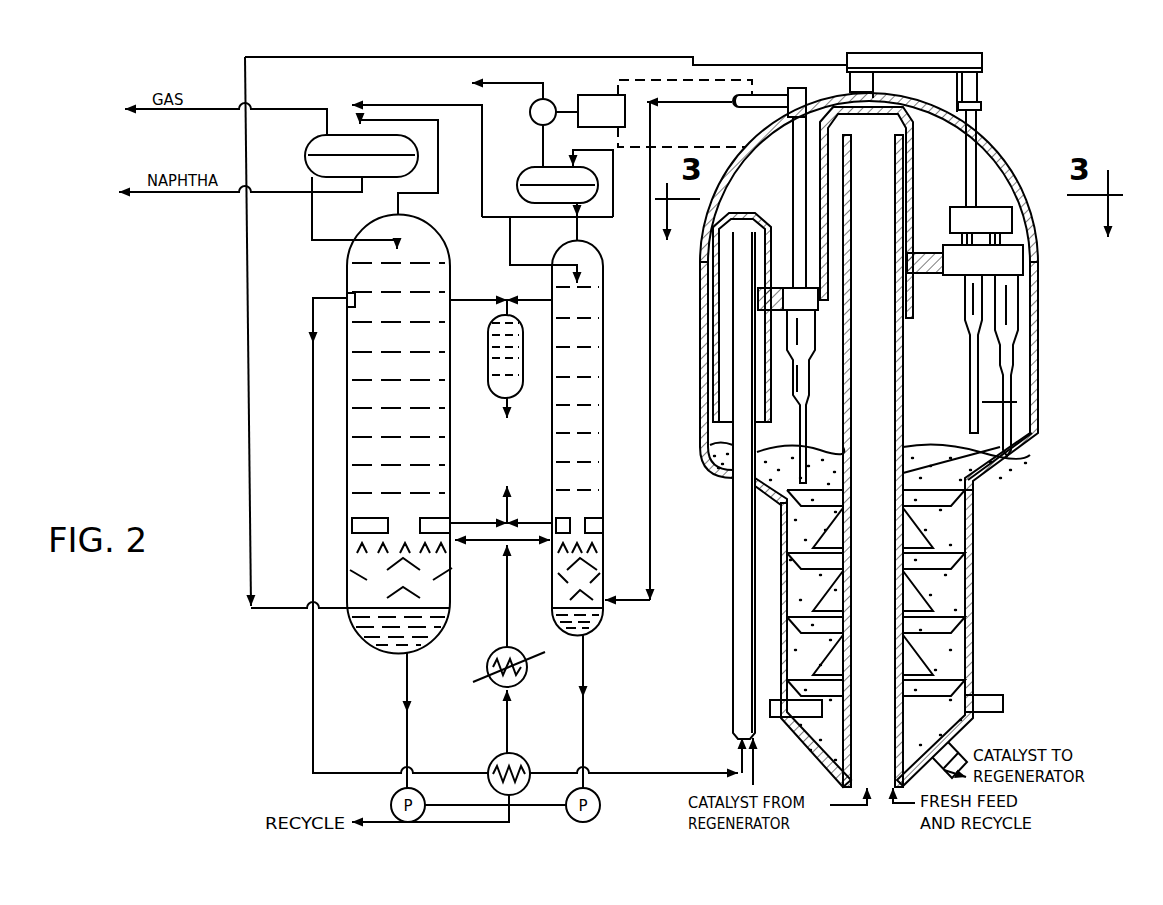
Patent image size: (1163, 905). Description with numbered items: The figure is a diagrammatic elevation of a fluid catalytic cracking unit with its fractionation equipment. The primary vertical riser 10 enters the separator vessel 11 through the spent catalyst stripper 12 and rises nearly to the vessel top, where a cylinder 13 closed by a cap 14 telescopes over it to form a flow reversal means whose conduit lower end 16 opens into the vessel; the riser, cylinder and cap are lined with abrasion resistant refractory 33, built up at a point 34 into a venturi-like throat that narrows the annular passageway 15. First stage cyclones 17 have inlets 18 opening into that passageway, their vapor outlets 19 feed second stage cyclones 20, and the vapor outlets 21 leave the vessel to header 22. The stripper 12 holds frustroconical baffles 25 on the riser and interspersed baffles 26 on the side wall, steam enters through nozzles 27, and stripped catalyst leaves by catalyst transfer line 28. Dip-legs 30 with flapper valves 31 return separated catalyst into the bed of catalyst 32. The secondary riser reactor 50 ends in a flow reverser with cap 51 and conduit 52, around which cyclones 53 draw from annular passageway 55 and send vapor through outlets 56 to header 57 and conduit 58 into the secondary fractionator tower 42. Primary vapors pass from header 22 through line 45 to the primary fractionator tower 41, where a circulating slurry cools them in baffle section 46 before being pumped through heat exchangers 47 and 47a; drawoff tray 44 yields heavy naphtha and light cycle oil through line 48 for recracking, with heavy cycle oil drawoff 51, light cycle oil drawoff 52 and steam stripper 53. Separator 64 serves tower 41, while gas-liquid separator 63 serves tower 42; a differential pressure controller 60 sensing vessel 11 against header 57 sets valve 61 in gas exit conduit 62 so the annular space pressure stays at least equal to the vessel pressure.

The primary vertical riser 10 is at (903, 348).
The separator vessel 11 is at (1042, 310).
The spent catalyst stripper 12 is at (973, 580).
The cylinder 13 is at (914, 156).
The cap 14 is at (888, 104).
The annular passageway 15 is at (907, 137).
The lower end of flow reversal conduit 16 is at (907, 312).
The first stage cyclones 17 is at (1035, 285).
The cyclone inlets 18 is at (923, 253).
The vapor outlets of first stage cyclones 19 is at (1005, 218).
The second stage cyclones 20 is at (962, 188).
The vapor outlets of second stage cyclones 21 is at (978, 90).
The header 22 is at (980, 60).
The frustroconical baffles 25 is at (918, 536).
The frustroconical baffles 26 is at (945, 630).
The nozzles 27 is at (997, 702).
The catalyst transfer line 28 is at (963, 747).
The dip-legs 30 is at (1017, 402).
The flapper valves 31 is at (1033, 455).
The bed of catalyst 32 is at (987, 463).
The abrasion resistant refractory 33 is at (903, 421).
The venturi-like restriction point 34 is at (820, 178).
The primary fractionator tower 41 is at (340, 407).
The secondary fractionator tower 42 is at (603, 397).
The drawoff tray 44 is at (350, 290).
The line 45 is at (249, 366).
The baffle section 46 is at (387, 562).
The heat exchanger 47 is at (498, 755).
The heat exchanger 47a is at (527, 670).
The line 48 is at (313, 650).
The secondary riser reactor 50 is at (732, 523).
The heavy cycle oil drawoff point 51 is at (458, 523).
The light cycle oil drawoff point 52 is at (452, 299).
The steam stripper 53 is at (487, 348).
The annular passageway 55 is at (725, 345).
The vapor outlets 56 is at (800, 138).
The header 57 is at (753, 110).
The conduit 58 is at (652, 300).
The differential pressure controller 60 is at (598, 95).
The valve 61 is at (531, 119).
The gas exit conduit 62 is at (543, 142).
The gas-liquid separator 63 is at (516, 200).
The separator 64 is at (312, 138).